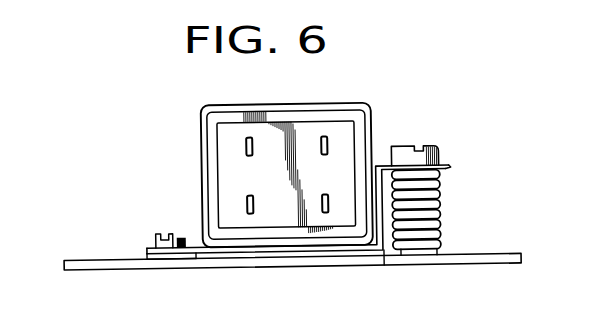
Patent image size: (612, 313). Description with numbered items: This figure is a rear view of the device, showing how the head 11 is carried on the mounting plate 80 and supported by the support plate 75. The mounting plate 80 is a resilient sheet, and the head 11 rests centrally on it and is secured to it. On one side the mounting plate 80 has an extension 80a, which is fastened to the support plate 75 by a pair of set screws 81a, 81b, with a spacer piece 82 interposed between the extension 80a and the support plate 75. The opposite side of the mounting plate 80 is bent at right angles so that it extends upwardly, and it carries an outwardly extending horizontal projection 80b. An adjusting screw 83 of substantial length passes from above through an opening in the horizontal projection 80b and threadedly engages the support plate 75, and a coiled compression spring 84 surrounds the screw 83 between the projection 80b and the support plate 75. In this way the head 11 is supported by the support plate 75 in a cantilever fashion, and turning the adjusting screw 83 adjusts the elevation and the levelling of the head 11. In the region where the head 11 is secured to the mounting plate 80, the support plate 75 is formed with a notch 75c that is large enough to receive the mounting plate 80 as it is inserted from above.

The head 11 is at (352, 129).
The support plate 75 is at (102, 264).
The notch 75c is at (269, 262).
The mounting plate 80 is at (302, 226).
The extension 80a is at (149, 246).
The horizontal projection 80b is at (451, 169).
The set screw 81a is at (147, 220).
The set screw 81b is at (158, 235).
The spacer piece 82 is at (166, 258).
The adjusting screw 83 is at (411, 153).
The coiled compression spring 84 is at (432, 207).